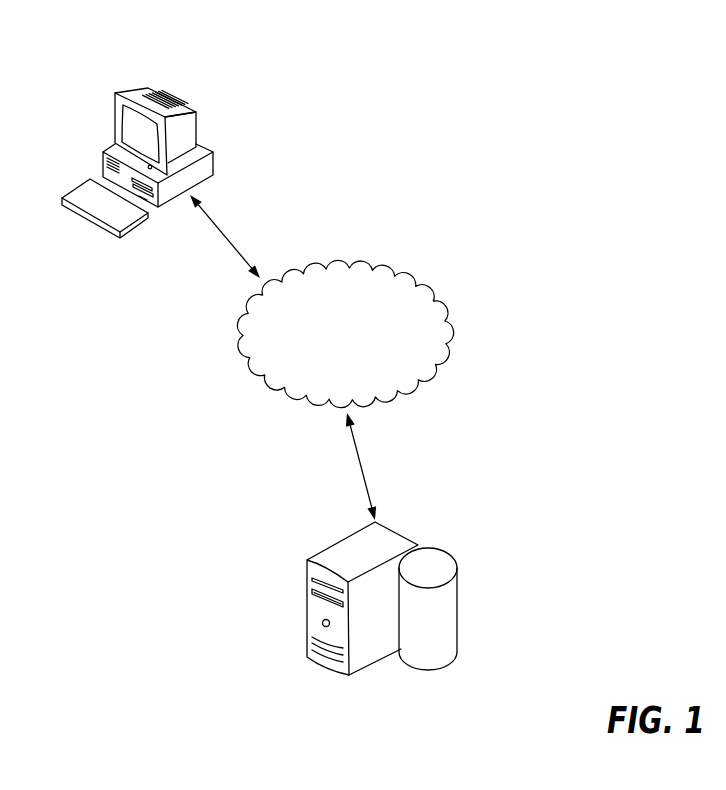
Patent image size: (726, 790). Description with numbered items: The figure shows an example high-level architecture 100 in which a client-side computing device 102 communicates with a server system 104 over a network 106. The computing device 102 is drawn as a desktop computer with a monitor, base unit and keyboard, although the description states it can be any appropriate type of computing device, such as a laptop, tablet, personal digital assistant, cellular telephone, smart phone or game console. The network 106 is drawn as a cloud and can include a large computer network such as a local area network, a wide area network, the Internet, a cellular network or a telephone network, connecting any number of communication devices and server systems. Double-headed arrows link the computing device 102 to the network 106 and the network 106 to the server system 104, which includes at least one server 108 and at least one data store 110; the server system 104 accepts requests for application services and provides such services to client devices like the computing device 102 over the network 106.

The high-level architecture 100 is at (573, 141).
The computing device 102 is at (115, 92).
The server system 104 is at (478, 507).
The network 106 is at (458, 333).
The server 108 is at (307, 620).
The database 110 is at (457, 597).